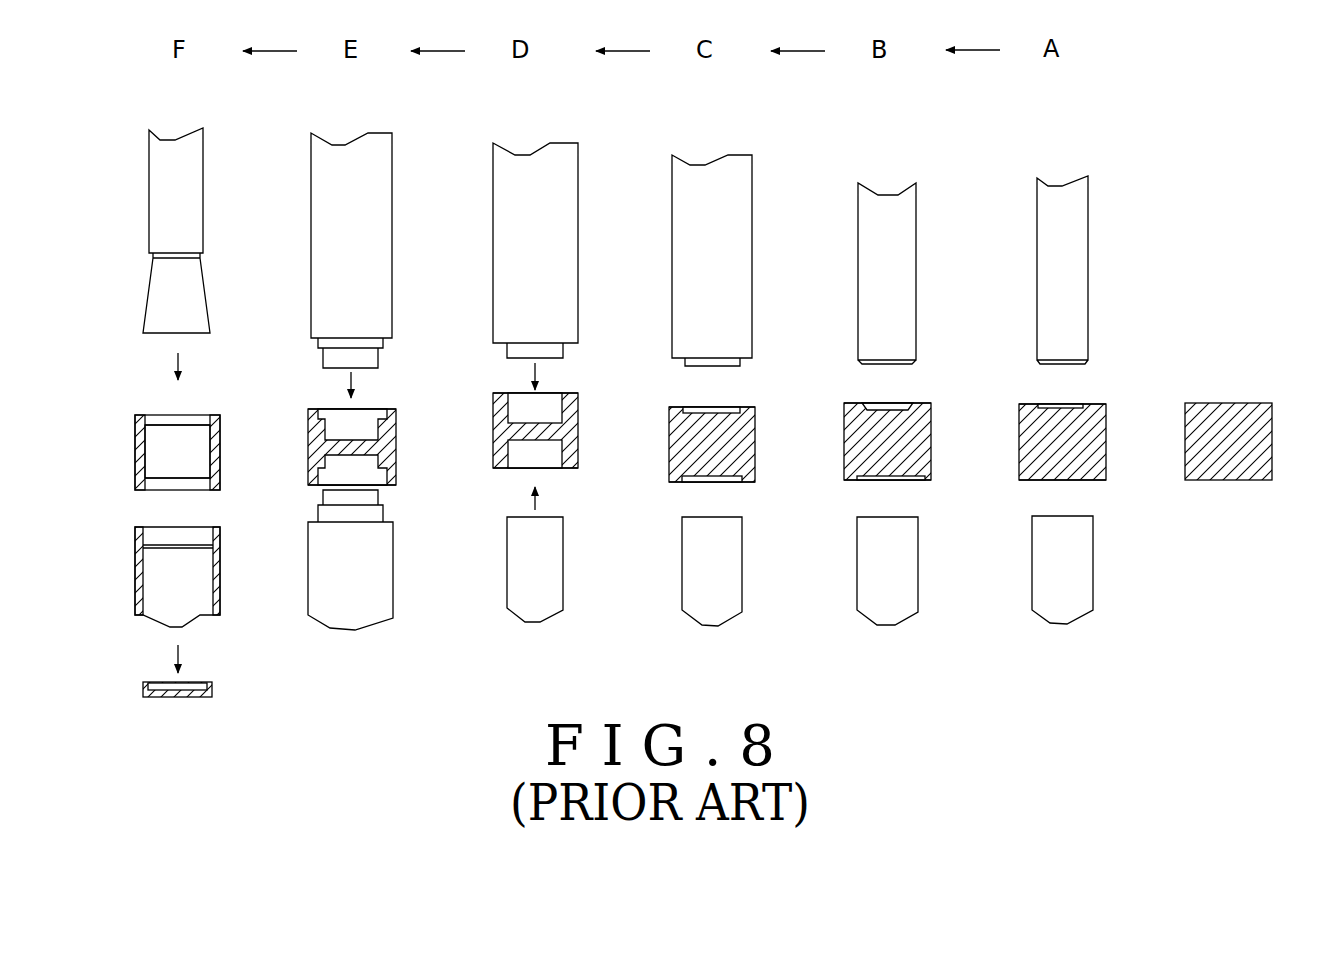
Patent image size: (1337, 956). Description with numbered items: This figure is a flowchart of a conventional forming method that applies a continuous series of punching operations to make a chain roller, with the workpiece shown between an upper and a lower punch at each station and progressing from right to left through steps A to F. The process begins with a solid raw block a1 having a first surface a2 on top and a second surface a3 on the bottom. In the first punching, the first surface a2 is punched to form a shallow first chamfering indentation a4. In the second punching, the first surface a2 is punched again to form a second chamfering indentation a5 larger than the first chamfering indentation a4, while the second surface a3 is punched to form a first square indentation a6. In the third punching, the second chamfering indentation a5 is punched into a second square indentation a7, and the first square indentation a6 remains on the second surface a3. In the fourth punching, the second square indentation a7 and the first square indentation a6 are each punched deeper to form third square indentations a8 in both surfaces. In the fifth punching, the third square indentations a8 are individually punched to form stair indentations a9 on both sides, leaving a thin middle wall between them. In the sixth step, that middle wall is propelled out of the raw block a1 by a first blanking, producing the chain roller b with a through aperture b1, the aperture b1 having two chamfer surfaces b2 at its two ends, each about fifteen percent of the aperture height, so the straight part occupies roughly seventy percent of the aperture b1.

The raw block a1 is at (1272, 443).
The first surface a2 is at (1100, 405).
The second surface a3 is at (1085, 481).
The first chamfering indentation a4 is at (1078, 406).
The second chamfering indentation a5 is at (895, 409).
The first square indentation a6 is at (898, 481).
The second square indentation a7 is at (725, 409).
The third square indentation a8 is at (553, 400).
The stair indentation a9 is at (355, 427).
The chain roller b is at (218, 467).
The aperture b1 is at (195, 450).
The chamfer surface b2 is at (197, 422).